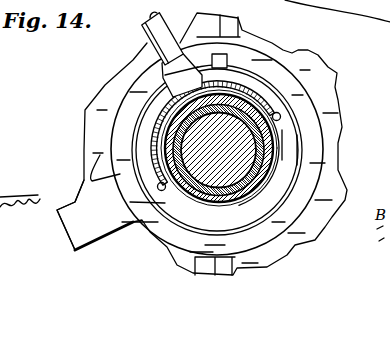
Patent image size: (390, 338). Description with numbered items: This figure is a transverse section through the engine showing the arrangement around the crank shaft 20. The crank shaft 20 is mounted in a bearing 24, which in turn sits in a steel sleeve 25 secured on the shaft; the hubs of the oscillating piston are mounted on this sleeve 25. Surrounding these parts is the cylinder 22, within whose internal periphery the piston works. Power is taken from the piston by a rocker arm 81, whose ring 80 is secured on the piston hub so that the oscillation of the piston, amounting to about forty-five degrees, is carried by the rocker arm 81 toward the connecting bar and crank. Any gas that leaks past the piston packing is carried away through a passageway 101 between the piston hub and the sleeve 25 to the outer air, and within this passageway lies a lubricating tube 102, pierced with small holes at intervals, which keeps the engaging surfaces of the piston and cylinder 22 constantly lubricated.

The crank shaft 20 is at (256, 192).
The cylinder 22 is at (318, 222).
The bearing 24 is at (206, 193).
The steel sleeve 25 is at (252, 184).
The ring 80 is at (292, 67).
The rocker arm 81 is at (73, 203).
The passageway 101 is at (303, 133).
The lubricating tube 102 is at (284, 118).